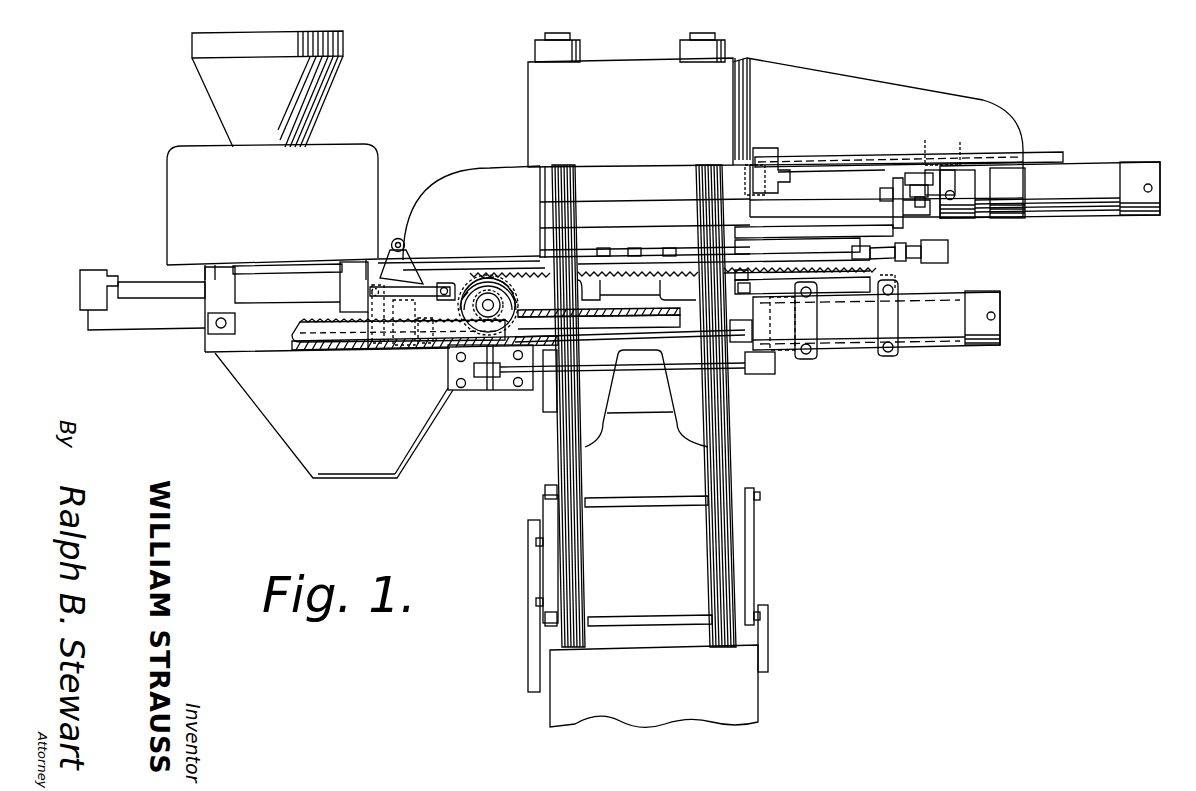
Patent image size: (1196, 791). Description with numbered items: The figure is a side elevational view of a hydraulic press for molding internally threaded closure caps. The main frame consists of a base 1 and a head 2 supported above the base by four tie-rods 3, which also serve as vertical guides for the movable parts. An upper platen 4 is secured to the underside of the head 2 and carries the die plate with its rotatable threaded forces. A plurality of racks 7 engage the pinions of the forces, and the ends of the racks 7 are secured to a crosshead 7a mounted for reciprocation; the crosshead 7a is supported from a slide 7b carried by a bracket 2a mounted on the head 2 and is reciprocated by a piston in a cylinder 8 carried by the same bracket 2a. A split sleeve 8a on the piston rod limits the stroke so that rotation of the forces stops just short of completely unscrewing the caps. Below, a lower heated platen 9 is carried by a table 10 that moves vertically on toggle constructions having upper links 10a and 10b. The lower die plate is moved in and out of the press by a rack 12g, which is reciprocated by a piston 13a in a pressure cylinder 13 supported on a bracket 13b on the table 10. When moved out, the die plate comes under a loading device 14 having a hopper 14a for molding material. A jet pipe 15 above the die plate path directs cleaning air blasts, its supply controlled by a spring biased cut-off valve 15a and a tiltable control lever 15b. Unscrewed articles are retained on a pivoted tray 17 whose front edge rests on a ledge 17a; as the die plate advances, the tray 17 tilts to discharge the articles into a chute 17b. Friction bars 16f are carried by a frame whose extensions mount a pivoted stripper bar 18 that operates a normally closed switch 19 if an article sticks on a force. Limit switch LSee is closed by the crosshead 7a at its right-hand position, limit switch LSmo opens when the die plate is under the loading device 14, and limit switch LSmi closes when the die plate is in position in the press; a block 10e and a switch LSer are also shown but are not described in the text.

The base 1 is at (745, 659).
The head 2 is at (633, 66).
The bracket 2a is at (908, 100).
The tie-rods 3 is at (562, 452).
The upper platen 4 is at (604, 216).
The racks 7 is at (776, 234).
The crosshead 7a is at (890, 214).
The slide 7b is at (1040, 160).
The cylinder 8 is at (1080, 182).
The split sleeve 8a is at (905, 218).
The lower heated platen 9 is at (688, 286).
The table 10 is at (633, 410).
The upper link 10a is at (543, 551).
The upper link 10b is at (548, 420).
The support block 10e is at (218, 354).
The rack 12g is at (308, 346).
The pressure cylinder 13 is at (927, 345).
The piston 13a is at (797, 360).
The bracket 13b is at (848, 352).
The loading device 14 is at (370, 158).
The hopper 14a is at (334, 77).
The jet pipe 15 is at (398, 238).
The cut-off valve 15a is at (413, 342).
The control lever 15b is at (376, 322).
The friction bars 16f is at (803, 244).
The tray 17 is at (826, 270).
The ledge 17a is at (743, 276).
The chute 17b is at (427, 425).
The stripper bar 18 is at (910, 255).
The switch 19 is at (948, 248).
The limit switch LSmo is at (84, 288).
The limit switch LSer is at (772, 172).
The limit switch LSee is at (936, 140).
The limit switch LSmi is at (893, 276).